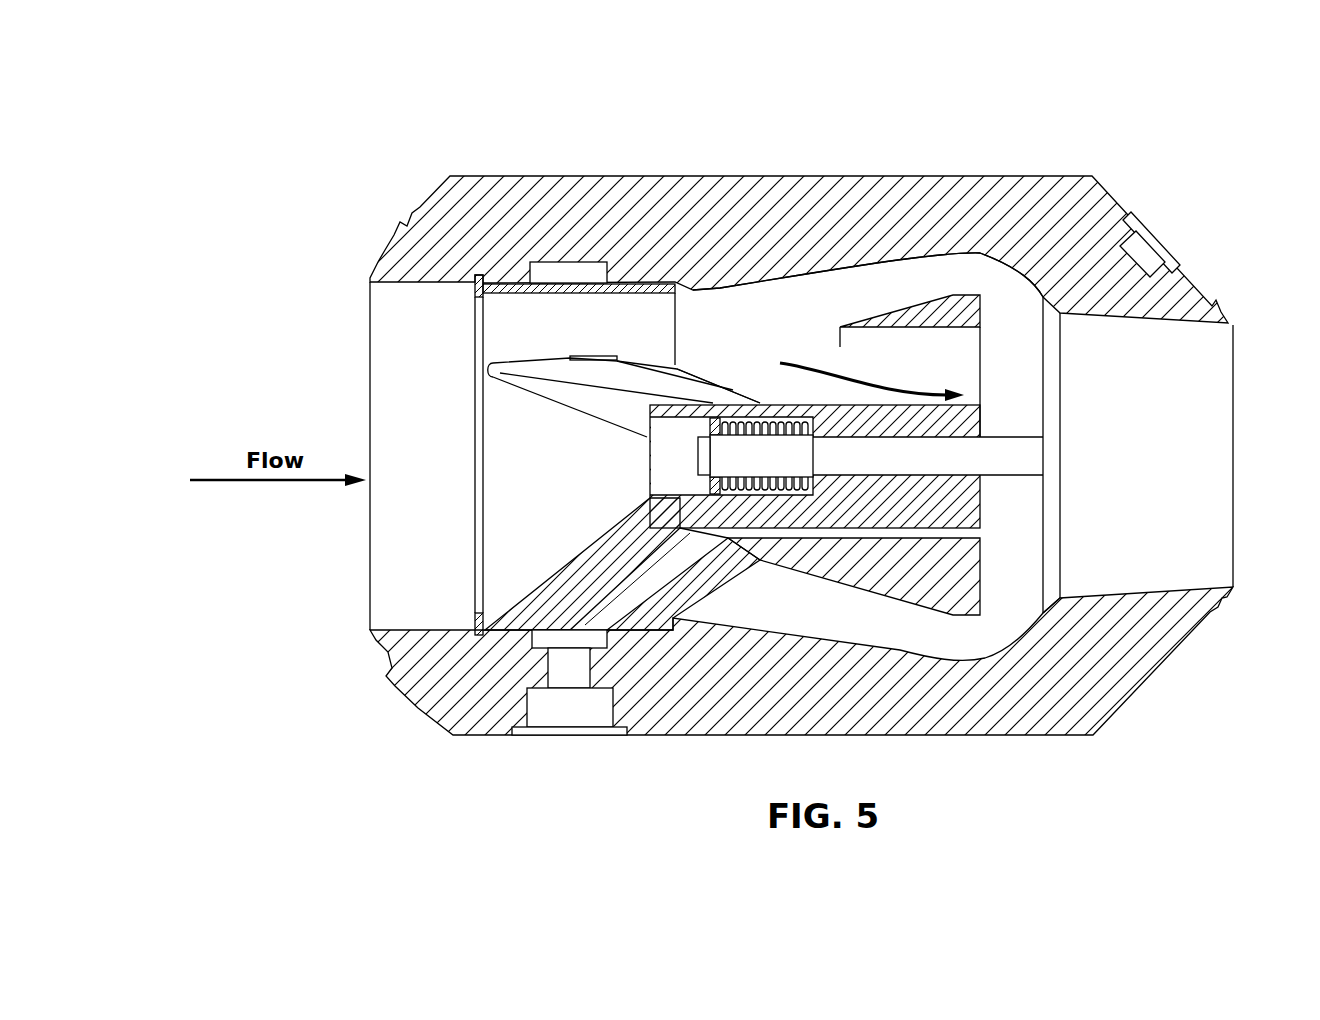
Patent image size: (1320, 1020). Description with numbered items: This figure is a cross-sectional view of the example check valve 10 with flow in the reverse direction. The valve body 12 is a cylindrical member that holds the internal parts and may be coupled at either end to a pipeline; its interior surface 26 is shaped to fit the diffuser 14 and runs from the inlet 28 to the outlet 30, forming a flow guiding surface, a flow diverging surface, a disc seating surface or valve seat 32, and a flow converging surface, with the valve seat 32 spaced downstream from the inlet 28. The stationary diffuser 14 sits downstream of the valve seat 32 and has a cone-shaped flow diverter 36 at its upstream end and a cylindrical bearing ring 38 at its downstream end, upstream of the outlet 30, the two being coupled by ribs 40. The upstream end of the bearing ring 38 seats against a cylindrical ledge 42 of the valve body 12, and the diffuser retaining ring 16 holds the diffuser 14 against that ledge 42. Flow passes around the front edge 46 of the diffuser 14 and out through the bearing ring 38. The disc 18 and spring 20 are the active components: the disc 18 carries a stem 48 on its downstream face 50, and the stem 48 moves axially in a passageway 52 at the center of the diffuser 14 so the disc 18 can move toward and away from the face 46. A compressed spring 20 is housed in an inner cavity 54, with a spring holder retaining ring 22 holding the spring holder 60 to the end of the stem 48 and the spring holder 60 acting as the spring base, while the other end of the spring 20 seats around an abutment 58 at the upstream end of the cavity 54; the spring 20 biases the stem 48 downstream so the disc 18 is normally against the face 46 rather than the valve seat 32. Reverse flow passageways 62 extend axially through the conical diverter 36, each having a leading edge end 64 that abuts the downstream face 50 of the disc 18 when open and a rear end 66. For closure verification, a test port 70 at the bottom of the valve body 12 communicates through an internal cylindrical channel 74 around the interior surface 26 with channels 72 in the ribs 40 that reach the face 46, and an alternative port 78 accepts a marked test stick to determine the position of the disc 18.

The valve 10 is at (950, 102).
The valve body 12 is at (995, 203).
The diffuser 14 is at (898, 353).
The diffuser retaining ring 16 is at (477, 627).
The disc 18 is at (1052, 582).
The spring 20 is at (767, 530).
The spring holder retaining ring 22 is at (710, 480).
The interior surface 26 is at (810, 272).
The inlet 28 is at (1236, 328).
The outlet 30 is at (372, 290).
The valve seat 32 is at (1057, 313).
The cone-shaped flow diverter 36 is at (883, 563).
The cylindrical bearing ring 38 is at (647, 293).
The ribs 40 is at (693, 387).
The cylindrical ledge 42 is at (693, 290).
The front edge 46 is at (953, 307).
The stem 48 is at (860, 455).
The downstream face 50 is at (1040, 383).
The passageway 52 is at (830, 465).
The cavity 54 is at (672, 420).
The abutment 58 is at (793, 413).
The spring holder 60 is at (713, 417).
The reverse flow passageways 62 is at (863, 376).
The leading edge end 64 is at (987, 370).
The rear end 66 is at (840, 340).
The test port 70 is at (563, 710).
The internal channels 72 is at (602, 595).
The internal cylindrical channel 74 is at (575, 273).
The port 78 is at (1153, 247).